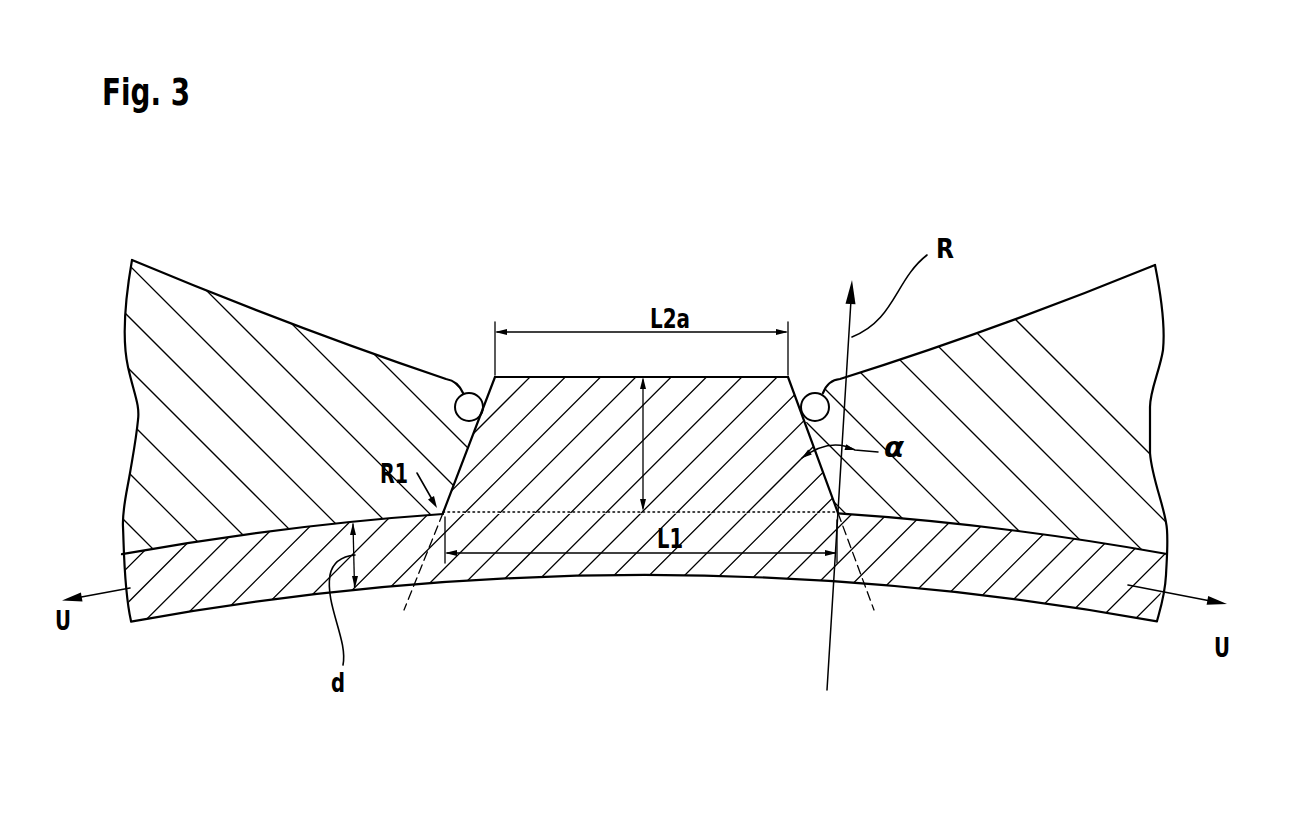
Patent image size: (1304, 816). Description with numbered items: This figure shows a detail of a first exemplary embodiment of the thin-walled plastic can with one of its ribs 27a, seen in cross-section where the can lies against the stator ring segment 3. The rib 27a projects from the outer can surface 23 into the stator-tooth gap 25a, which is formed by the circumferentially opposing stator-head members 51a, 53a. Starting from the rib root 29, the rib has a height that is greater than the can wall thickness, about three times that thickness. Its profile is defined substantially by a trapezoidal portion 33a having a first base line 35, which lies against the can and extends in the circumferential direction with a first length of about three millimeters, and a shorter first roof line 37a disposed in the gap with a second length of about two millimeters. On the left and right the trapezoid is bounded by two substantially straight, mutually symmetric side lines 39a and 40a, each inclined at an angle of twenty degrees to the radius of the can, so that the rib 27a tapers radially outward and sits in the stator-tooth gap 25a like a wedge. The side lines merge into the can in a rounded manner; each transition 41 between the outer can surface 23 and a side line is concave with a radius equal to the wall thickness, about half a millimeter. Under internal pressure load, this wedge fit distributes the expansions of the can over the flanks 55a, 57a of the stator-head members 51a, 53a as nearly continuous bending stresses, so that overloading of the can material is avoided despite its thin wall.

The stator ring segment 3 is at (248, 568).
The outer can surface 23 is at (1015, 507).
The stator-tooth gap 25a is at (628, 355).
The rib 27a is at (723, 405).
The rib root 29 is at (622, 480).
The trapezoidal portion 33a is at (578, 388).
The first base line 35 is at (555, 513).
The first roof line 37a is at (698, 378).
The right side line 39a is at (836, 382).
The left side line 40a is at (458, 382).
The transition 41 is at (444, 513).
The stator-head member 51a is at (1103, 433).
The stator-head member 53a is at (182, 430).
The flank 55a is at (530, 377).
The flank 57a is at (812, 478).